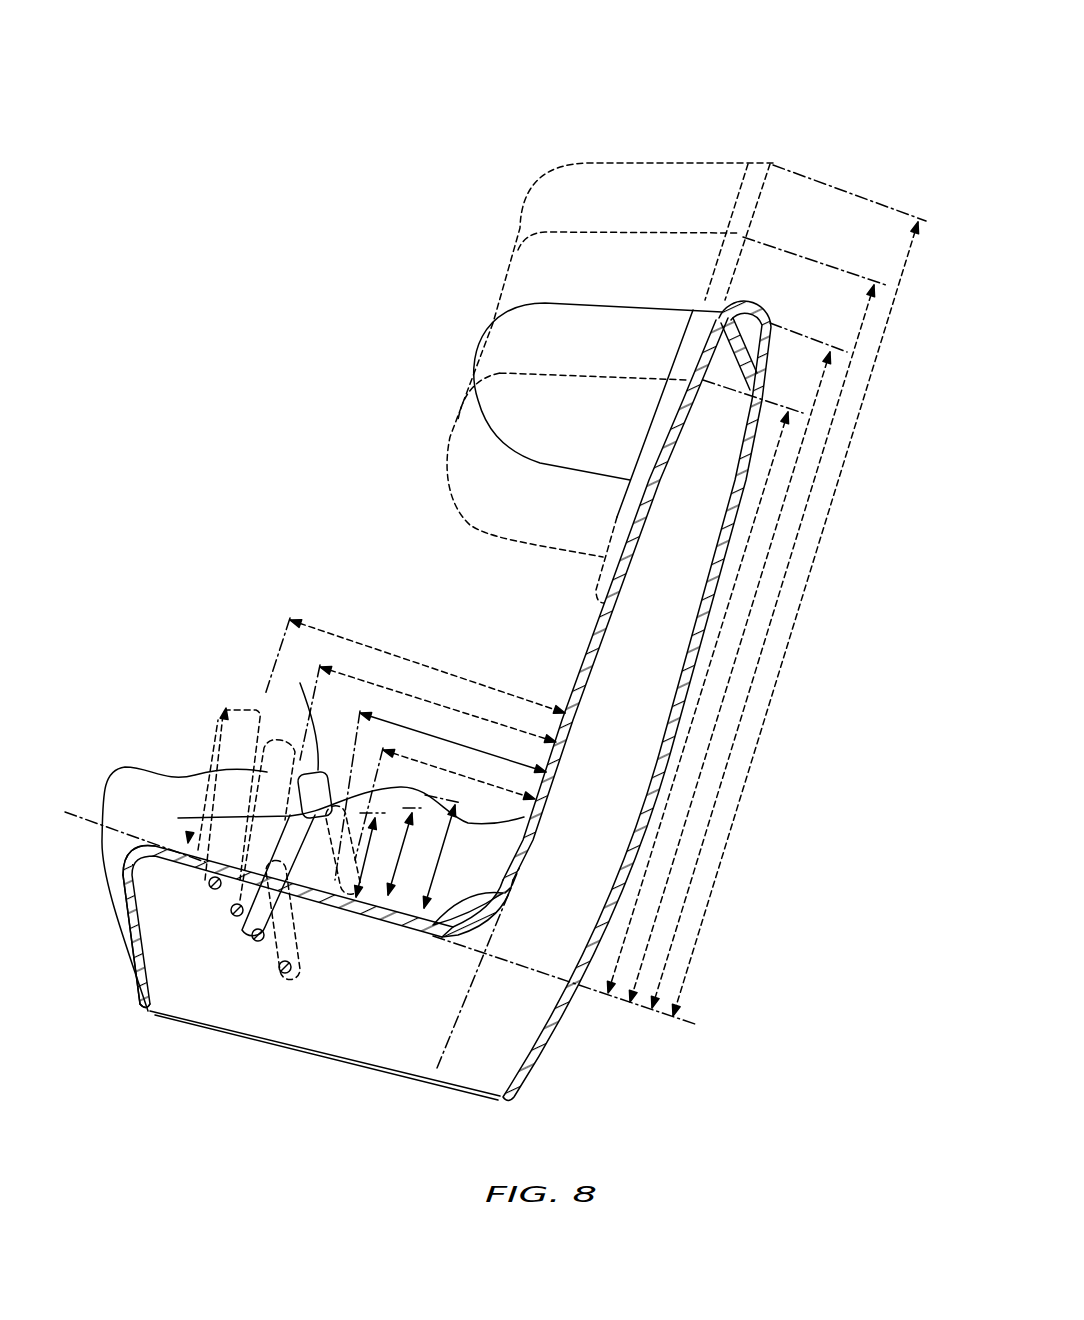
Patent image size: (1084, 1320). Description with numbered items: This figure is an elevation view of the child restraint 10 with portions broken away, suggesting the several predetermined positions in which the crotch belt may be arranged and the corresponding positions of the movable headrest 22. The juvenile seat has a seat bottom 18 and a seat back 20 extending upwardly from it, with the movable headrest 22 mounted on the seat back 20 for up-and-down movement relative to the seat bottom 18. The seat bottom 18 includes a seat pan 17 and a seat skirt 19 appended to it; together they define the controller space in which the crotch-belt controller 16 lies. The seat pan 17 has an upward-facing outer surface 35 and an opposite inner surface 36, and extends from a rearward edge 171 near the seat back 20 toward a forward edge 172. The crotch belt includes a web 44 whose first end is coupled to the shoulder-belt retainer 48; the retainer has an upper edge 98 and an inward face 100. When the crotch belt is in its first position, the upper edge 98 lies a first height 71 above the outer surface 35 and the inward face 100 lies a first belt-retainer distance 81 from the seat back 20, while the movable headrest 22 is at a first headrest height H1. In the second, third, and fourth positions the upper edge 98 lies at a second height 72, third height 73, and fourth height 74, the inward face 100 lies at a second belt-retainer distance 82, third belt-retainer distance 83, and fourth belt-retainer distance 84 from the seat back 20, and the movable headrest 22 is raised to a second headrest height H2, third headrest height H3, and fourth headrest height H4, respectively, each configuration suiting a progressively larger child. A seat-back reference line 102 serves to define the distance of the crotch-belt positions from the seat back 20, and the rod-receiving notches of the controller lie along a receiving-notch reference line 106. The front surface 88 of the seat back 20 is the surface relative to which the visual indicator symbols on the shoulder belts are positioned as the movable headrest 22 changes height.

The child restraint 10 is at (797, 139).
The crotch-belt controller 16 is at (283, 1017).
The seat pan 17 is at (432, 939).
The seat bottom 18 is at (126, 917).
The seat skirt 19 is at (160, 1014).
The seat back 20 is at (738, 503).
The movable headrest 22 is at (465, 338).
The outer surface 35 is at (380, 912).
The inner surface 36 is at (397, 936).
The web 44 is at (275, 893).
The shoulder-belt retainer 48 is at (317, 775).
The first height 71 is at (372, 843).
The second height 72 is at (405, 843).
The third height 73 is at (450, 848).
The fourth height 74 is at (212, 752).
The first belt-retainer distance 81 is at (428, 764).
The second belt-retainer distance 82 is at (396, 720).
The third belt-retainer distance 83 is at (368, 681).
The fourth belt-retainer distance 84 is at (350, 638).
The front surface 88 is at (595, 633).
The upper edge 98 is at (343, 673).
The inward face 100 is at (327, 815).
The seat-back reference line 102 is at (472, 1000).
The receiving-notch reference line 106 is at (70, 820).
The rearward edge 171 is at (505, 893).
The forward edge 172 is at (158, 856).
The first headrest height H1 is at (760, 537).
The second headrest height H2 is at (770, 560).
The third headrest height H3 is at (787, 583).
The fourth headrest height H4 is at (800, 607).